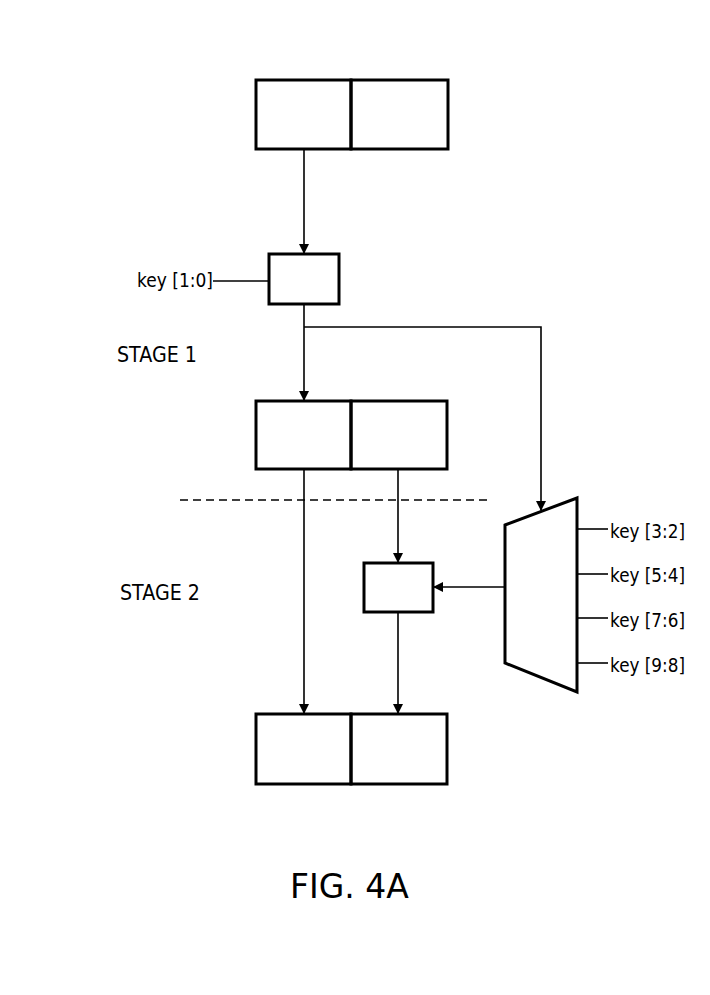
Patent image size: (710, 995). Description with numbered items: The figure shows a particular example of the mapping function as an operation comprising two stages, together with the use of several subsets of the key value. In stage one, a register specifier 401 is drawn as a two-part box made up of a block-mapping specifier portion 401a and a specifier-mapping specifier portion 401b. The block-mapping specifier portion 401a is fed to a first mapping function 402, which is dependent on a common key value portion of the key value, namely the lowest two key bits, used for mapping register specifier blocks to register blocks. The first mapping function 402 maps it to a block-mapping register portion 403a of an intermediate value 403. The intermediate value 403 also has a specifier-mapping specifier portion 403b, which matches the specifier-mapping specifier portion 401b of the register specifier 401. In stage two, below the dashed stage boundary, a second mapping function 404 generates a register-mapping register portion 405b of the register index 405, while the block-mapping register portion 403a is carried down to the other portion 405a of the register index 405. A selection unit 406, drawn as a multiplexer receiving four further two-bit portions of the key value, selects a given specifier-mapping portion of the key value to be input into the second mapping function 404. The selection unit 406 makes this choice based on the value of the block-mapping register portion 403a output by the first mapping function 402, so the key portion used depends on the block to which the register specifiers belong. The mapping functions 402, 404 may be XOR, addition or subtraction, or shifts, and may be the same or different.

The register specifier 401 is at (387, 85).
The block-mapping specifier portion 401a is at (298, 94).
The specifier-mapping specifier portion 401b is at (407, 94).
The first mapping function 402 is at (342, 280).
The intermediate value 403 is at (326, 411).
The block-mapping register portion 403a is at (333, 415).
The specifier-mapping specifier portion 403b is at (412, 418).
The second mapping function 404 is at (420, 562).
The register index 405 is at (318, 774).
The register index portion 405a is at (303, 768).
The register-mapping register portion 405b is at (387, 768).
The selection unit 406 is at (560, 500).